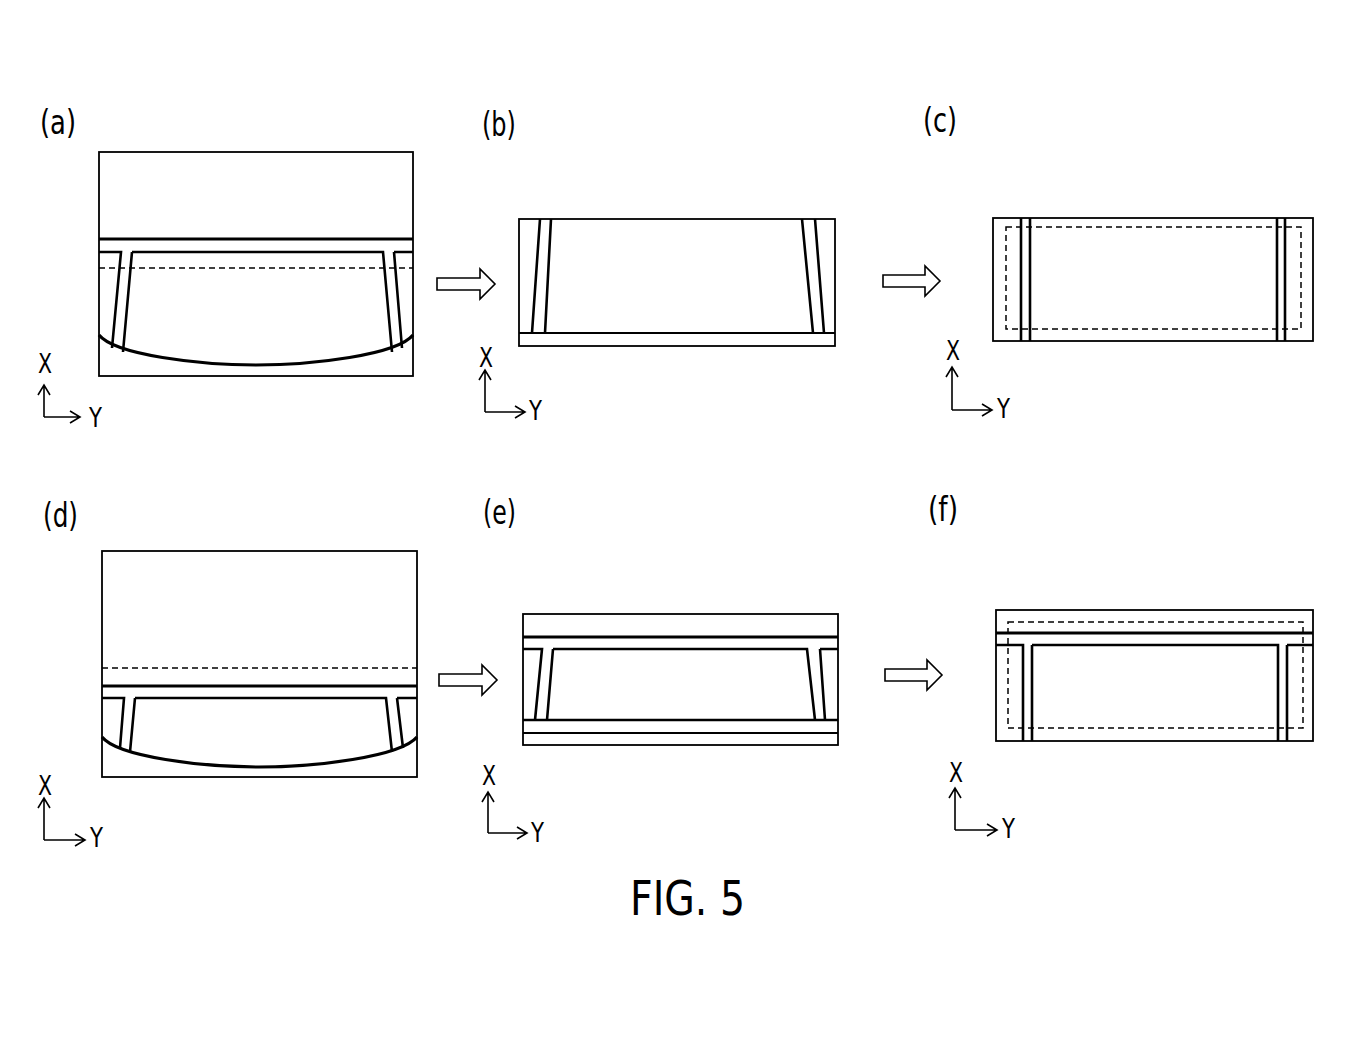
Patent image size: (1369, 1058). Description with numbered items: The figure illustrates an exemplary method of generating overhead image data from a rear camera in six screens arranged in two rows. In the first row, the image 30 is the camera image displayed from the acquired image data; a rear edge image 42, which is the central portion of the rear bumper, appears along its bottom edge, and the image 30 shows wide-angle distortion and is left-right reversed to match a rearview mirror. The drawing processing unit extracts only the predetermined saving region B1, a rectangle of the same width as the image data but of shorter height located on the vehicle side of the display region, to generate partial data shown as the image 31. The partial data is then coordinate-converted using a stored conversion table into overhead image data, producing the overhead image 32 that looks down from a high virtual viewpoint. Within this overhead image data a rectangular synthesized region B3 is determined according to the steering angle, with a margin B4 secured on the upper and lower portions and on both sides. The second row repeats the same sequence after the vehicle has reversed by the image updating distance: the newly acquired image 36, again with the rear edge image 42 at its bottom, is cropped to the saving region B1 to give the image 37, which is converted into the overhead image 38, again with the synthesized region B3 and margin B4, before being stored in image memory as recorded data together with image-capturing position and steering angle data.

The image 30 is at (161, 158).
The image 36 is at (163, 568).
The image 31 is at (625, 232).
The image 37 is at (643, 625).
The overhead image 32 is at (1082, 222).
The overhead image 38 is at (1088, 613).
The rear edge image 42 is at (153, 370).
The saving region B1 is at (304, 283).
The synthesized region B3 is at (1112, 318).
The margin B4 is at (1193, 222).